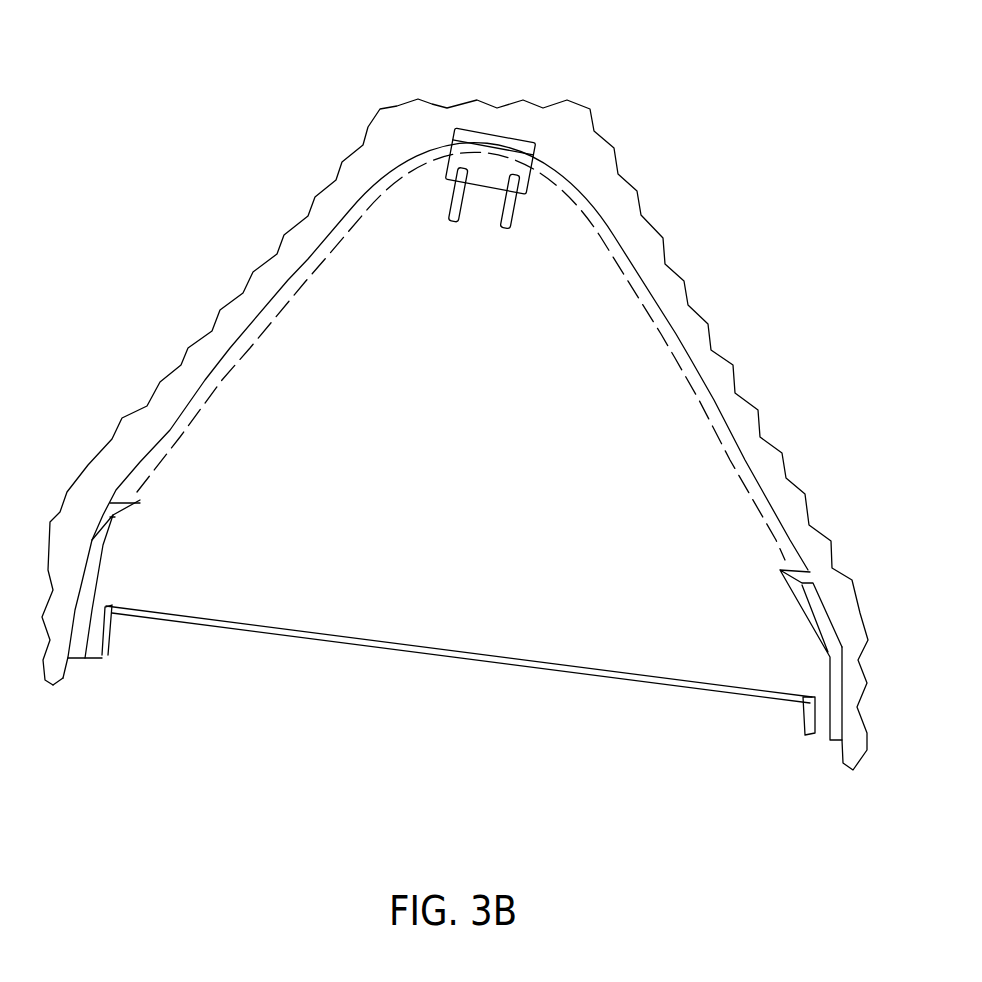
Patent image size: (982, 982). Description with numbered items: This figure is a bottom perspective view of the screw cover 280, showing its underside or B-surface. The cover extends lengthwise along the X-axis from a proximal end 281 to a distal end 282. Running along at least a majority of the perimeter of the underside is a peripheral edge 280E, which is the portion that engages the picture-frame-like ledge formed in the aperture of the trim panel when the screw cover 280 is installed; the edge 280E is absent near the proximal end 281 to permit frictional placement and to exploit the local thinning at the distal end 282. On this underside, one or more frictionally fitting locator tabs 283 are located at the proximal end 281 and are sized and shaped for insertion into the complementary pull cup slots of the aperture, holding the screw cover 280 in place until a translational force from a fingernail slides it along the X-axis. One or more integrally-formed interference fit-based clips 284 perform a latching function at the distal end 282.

The screw cover 280 is at (452, 441).
The peripheral edge 280E is at (461, 356).
The proximal end 281 is at (457, 672).
The distal end 282 is at (455, 387).
The locator tabs 283 is at (773, 720).
The interference fit-based clips 284 is at (507, 140).